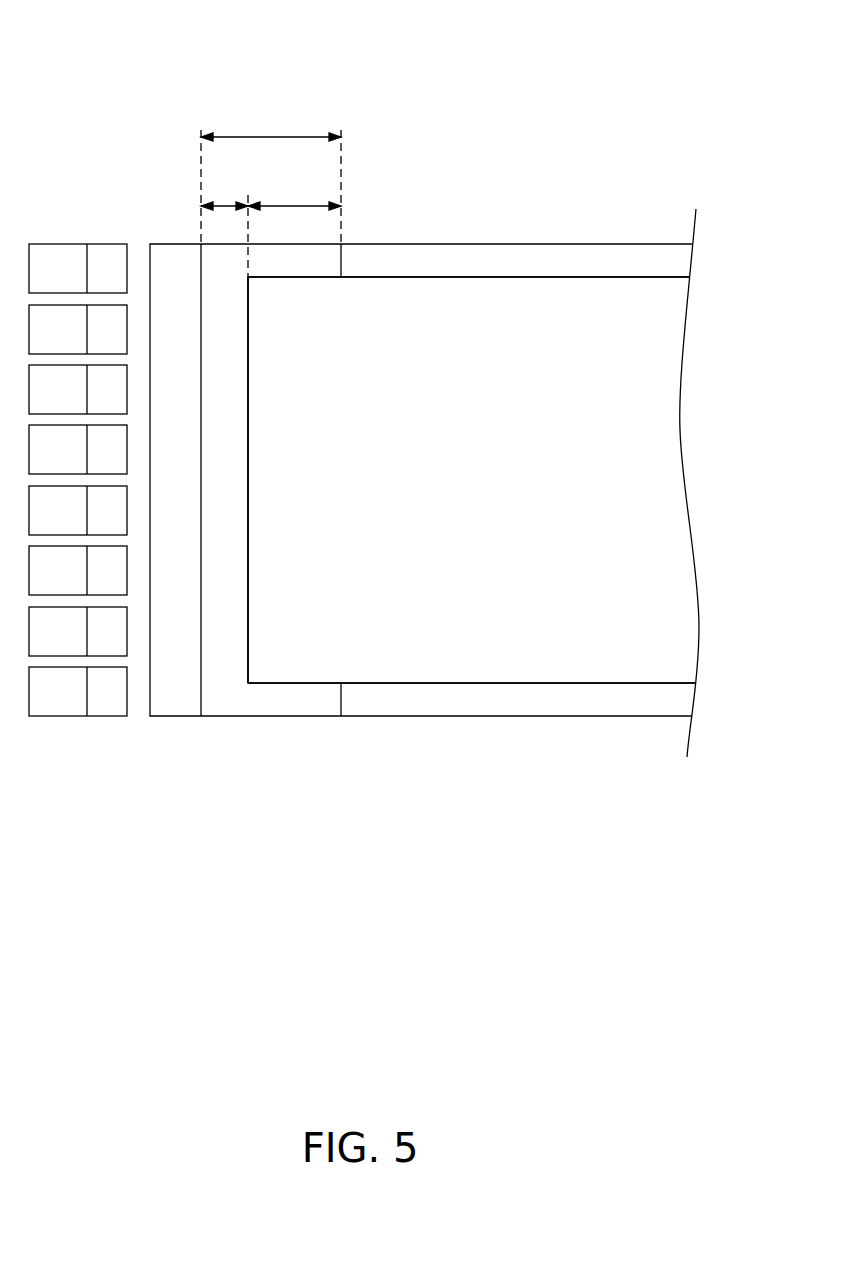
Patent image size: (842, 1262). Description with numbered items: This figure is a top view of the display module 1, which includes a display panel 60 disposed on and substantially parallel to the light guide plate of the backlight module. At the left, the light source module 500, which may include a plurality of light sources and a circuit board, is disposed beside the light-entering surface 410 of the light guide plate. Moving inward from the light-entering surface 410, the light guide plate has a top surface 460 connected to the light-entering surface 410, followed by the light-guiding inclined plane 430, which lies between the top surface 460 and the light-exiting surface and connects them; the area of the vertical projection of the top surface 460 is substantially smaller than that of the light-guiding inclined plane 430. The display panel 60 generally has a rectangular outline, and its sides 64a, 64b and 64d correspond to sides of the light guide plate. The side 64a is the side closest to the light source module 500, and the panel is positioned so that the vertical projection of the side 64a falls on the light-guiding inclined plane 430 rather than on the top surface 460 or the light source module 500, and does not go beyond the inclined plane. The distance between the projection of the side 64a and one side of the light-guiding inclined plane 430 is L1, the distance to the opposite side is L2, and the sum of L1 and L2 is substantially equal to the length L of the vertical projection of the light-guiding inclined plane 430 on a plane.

The display module 1 is at (55, 35).
The light-entering surface 410 is at (150, 272).
The top surface 460 is at (178, 703).
The light-guiding inclined plane 430 is at (245, 703).
The display panel 60 is at (657, 309).
The side of the display panel 64a is at (248, 320).
The side of the display panel 64d is at (565, 277).
The side of the display panel 64b is at (586, 685).
The light source module 500 is at (59, 740).
The length of the vertical projection of the light-guiding inclined plane L is at (271, 175).
The distance L1 is at (224, 225).
The distance L2 is at (294, 192).